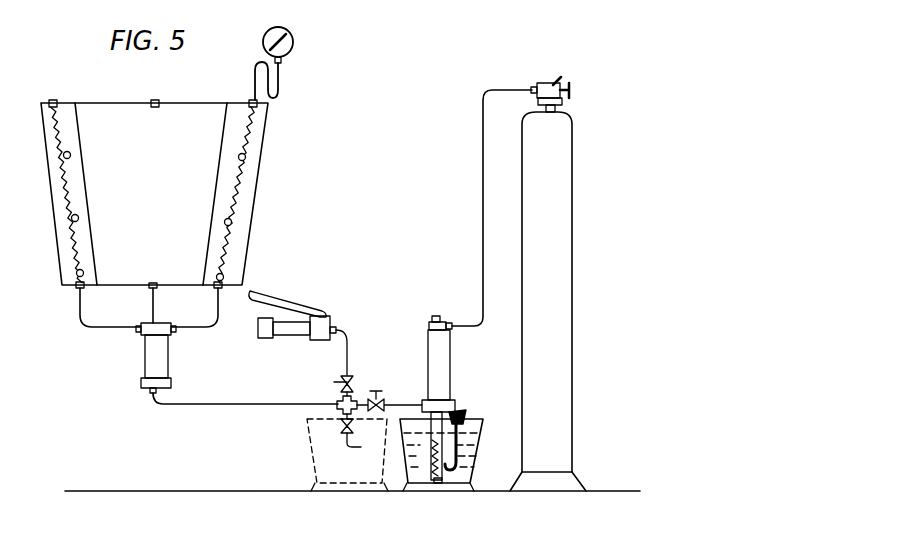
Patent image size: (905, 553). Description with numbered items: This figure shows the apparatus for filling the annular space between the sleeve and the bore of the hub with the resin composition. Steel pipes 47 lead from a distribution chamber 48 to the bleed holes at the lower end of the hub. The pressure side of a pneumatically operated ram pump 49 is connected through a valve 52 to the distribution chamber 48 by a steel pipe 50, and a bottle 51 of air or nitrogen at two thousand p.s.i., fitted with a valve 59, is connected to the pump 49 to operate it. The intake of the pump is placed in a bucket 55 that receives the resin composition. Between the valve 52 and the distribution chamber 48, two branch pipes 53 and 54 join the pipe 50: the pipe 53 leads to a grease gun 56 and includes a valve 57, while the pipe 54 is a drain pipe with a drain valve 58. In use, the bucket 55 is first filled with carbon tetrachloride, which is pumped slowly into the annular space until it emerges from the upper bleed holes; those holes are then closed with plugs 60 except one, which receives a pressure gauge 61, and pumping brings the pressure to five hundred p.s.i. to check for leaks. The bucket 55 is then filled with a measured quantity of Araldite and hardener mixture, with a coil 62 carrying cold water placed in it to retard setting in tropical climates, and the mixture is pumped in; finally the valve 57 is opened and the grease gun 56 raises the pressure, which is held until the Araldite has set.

The steel pipes 47 is at (86, 308).
The distribution chamber 48 is at (152, 358).
The pneumatically operated ram pump 49 is at (440, 360).
The steel pipe 50 is at (200, 406).
The bottle 51 is at (527, 292).
The valve 52 is at (374, 399).
The branch pipe 53 is at (356, 340).
The drain pipe 54 is at (347, 455).
The bucket 55 is at (469, 464).
The grease gun 56 is at (301, 331).
The valve 57 is at (334, 384).
The drain valve 58 is at (340, 432).
The valve 59 is at (548, 84).
The plugs 60 is at (154, 101).
The pressure gauge 61 is at (294, 45).
The coil 62 is at (464, 421).